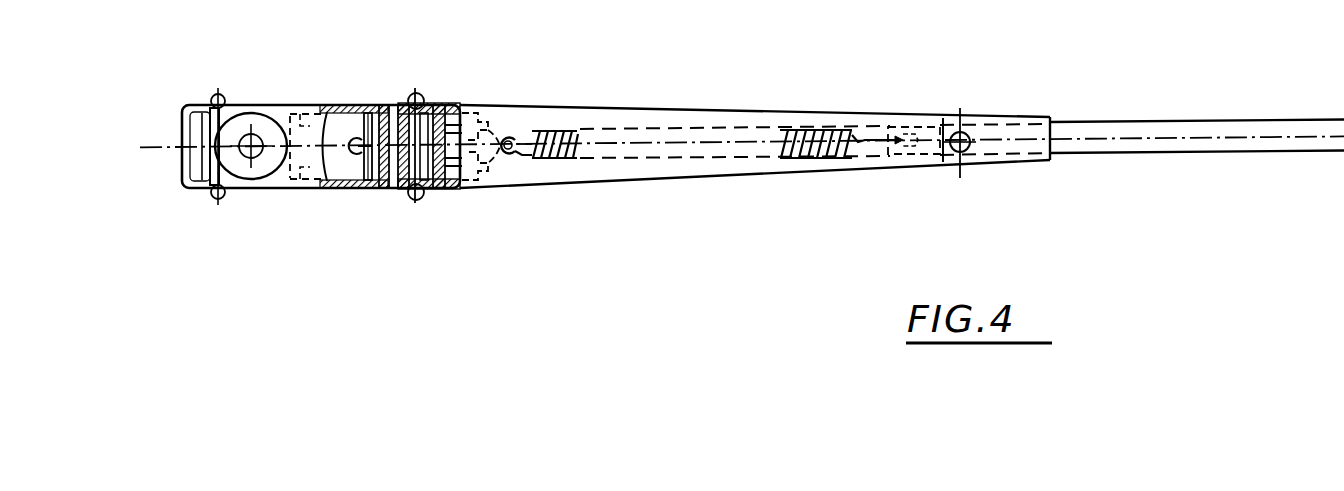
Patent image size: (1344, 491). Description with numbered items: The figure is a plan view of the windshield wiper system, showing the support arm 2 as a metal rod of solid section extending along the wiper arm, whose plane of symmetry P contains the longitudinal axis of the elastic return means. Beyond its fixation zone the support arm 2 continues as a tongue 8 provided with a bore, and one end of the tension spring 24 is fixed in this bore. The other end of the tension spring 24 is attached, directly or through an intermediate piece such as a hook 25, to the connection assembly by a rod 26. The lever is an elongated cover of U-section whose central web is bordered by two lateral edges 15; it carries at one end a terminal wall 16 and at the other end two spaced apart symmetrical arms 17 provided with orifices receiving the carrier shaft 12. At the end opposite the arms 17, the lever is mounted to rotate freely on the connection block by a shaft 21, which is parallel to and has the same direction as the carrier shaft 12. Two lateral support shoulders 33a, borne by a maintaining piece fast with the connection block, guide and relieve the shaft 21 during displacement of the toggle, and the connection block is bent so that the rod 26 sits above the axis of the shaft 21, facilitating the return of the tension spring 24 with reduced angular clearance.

The support arm 2 is at (1142, 122).
The tongue 8 is at (934, 127).
The carrier shaft 12 is at (413, 190).
The lateral edges 15 is at (303, 105).
The terminal wall 16 is at (182, 168).
The symmetrical arms 17 is at (478, 105).
The shaft 21 is at (218, 200).
The tension spring 24 is at (830, 126).
The hook 25 is at (497, 178).
The rod 26 is at (357, 190).
The lateral support shoulders 33a is at (319, 105).
The plane of symmetry P is at (158, 146).